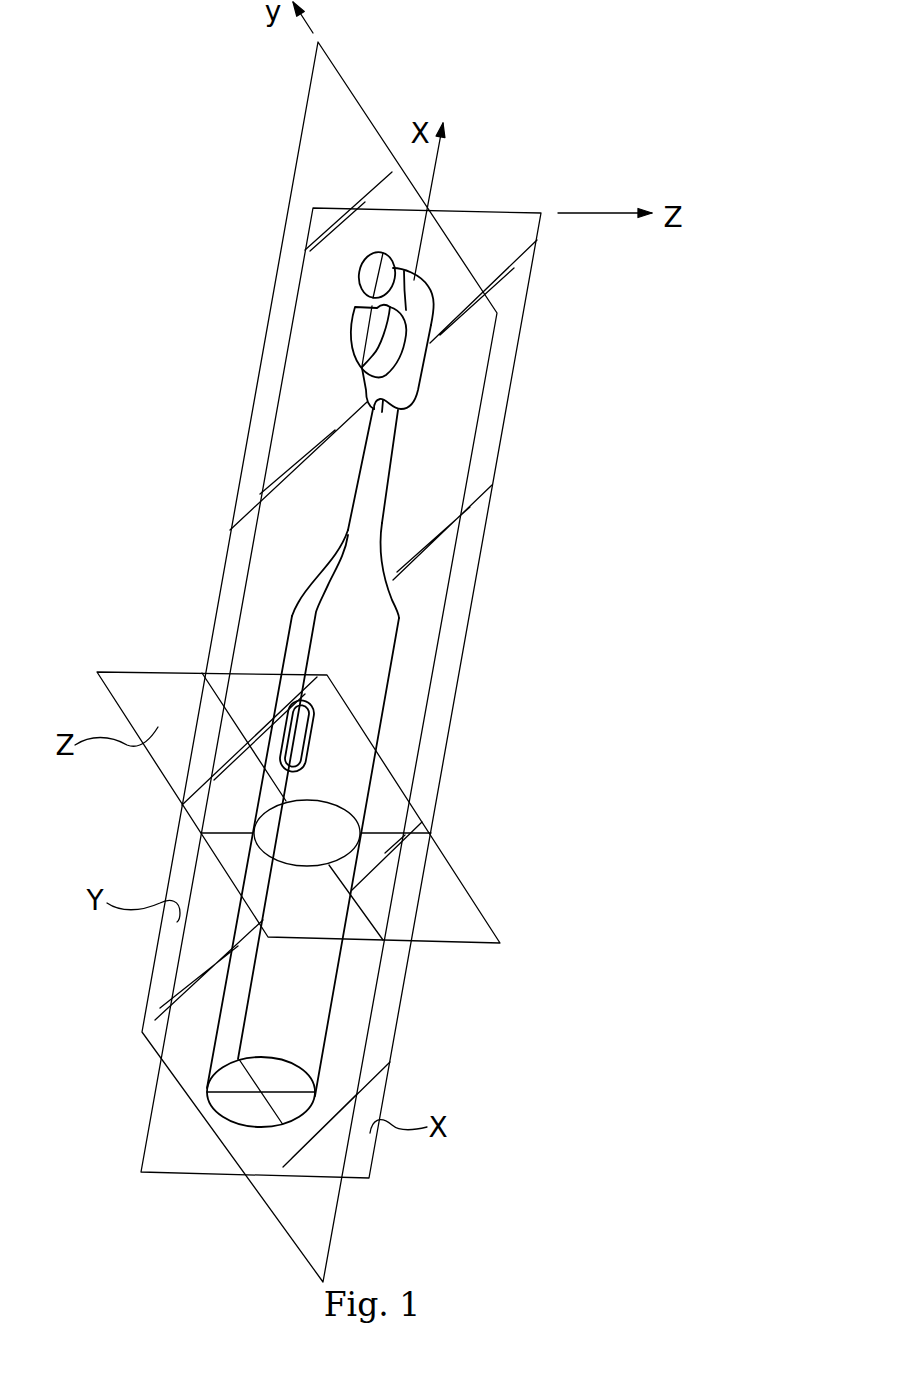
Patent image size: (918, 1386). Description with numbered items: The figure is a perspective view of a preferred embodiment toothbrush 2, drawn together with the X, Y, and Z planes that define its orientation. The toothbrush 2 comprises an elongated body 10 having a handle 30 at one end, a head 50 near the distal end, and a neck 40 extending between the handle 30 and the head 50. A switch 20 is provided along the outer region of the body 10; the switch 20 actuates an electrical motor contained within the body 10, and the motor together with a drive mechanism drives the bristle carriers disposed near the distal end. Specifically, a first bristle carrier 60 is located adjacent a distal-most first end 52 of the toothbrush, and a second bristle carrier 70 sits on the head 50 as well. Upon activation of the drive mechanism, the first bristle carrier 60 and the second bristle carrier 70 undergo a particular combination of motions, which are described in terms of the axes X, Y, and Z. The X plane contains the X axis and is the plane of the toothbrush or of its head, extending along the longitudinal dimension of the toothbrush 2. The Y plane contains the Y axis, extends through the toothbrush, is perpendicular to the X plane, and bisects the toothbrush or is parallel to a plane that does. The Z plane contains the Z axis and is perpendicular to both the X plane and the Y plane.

The toothbrush 2 is at (505, 627).
The elongated body 10 is at (368, 658).
The switch 20 is at (302, 720).
The handle 30 is at (312, 967).
The neck 40 is at (383, 470).
The head 50 is at (430, 323).
The distal-most first end 52 is at (424, 291).
The first bristle carrier 60 is at (363, 277).
The second bristle carrier 70 is at (355, 336).